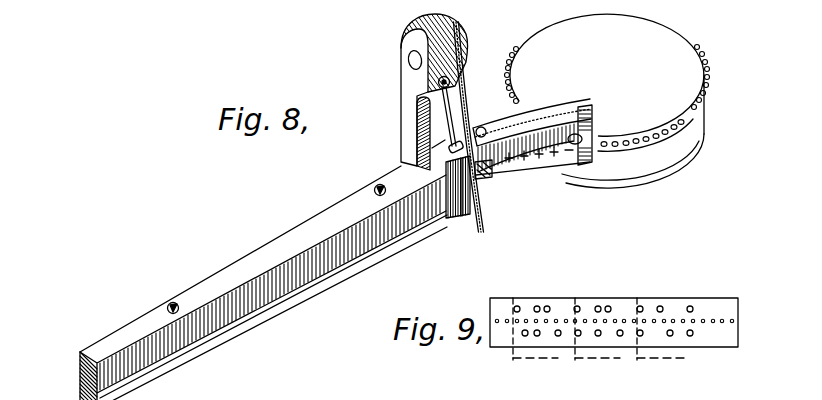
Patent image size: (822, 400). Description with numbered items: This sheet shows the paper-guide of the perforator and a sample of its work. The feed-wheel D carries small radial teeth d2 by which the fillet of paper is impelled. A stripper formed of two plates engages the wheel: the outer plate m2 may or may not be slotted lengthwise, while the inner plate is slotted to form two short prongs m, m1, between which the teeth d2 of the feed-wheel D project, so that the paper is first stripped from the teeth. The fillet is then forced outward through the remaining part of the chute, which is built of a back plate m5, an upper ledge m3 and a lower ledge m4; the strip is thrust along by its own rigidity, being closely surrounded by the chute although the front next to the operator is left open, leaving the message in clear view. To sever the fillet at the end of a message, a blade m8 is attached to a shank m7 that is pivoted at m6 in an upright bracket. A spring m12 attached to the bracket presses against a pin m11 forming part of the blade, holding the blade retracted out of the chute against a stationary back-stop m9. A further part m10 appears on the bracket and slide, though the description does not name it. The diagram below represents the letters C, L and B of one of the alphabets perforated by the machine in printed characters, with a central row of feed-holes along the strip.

In FIG. 8, the feed-wheel D is at (607, 101).
In FIG. 8, the radial teeth d2 is at (709, 99).
In FIG. 8, the prong m is at (593, 150).
In FIG. 8, the prong m1 is at (588, 106).
In FIG. 8, the outer plate m2 is at (593, 123).
In FIG. 8, the upper ledge m3 is at (363, 203).
In FIG. 8, the lower ledge m4 is at (390, 257).
In FIG. 8, the back plate m5 is at (82, 391).
In FIG. 8, the pivot m6 is at (412, 73).
In FIG. 8, the shank m7 is at (462, 83).
In FIG. 8, the blade m8 is at (485, 215).
In FIG. 8, the back-stop m9 is at (500, 188).
In FIG. 8, the slide block m10 is at (460, 215).
In FIG. 8, the pin m11 is at (415, 127).
In FIG. 8, the spring m12 is at (452, 107).
In FIG. 9, the letter c C is at (560, 296).
In FIG. 9, the letter l L is at (622, 296).
In FIG. 9, the letter b B is at (692, 296).